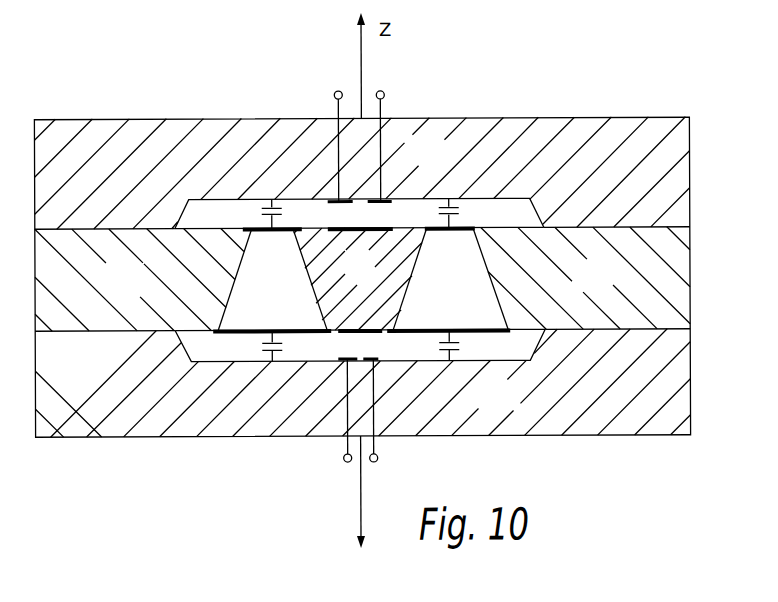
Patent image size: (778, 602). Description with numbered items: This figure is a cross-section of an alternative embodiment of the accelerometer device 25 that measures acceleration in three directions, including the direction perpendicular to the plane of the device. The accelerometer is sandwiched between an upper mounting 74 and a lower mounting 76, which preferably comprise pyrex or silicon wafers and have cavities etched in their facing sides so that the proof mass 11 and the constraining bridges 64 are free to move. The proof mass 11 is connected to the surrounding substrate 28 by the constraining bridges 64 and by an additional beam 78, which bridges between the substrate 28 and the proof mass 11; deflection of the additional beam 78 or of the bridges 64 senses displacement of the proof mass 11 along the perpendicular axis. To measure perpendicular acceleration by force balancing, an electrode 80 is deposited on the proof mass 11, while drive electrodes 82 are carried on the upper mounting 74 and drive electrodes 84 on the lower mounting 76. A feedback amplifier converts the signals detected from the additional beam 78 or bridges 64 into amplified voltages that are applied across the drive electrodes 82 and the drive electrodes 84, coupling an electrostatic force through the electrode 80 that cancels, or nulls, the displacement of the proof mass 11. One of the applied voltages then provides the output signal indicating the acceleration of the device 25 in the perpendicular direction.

The device 25 is at (608, 105).
The proof mass 11 is at (368, 281).
The substrate 28 is at (137, 292).
The constraining bridges 64 is at (250, 328).
The mounting 74 is at (437, 162).
The mounting 76 is at (512, 407).
The additional beam 78 is at (278, 241).
The electrode 80 is at (376, 227).
The drive electrodes 82 is at (347, 83).
The drive electrodes 84 is at (349, 486).